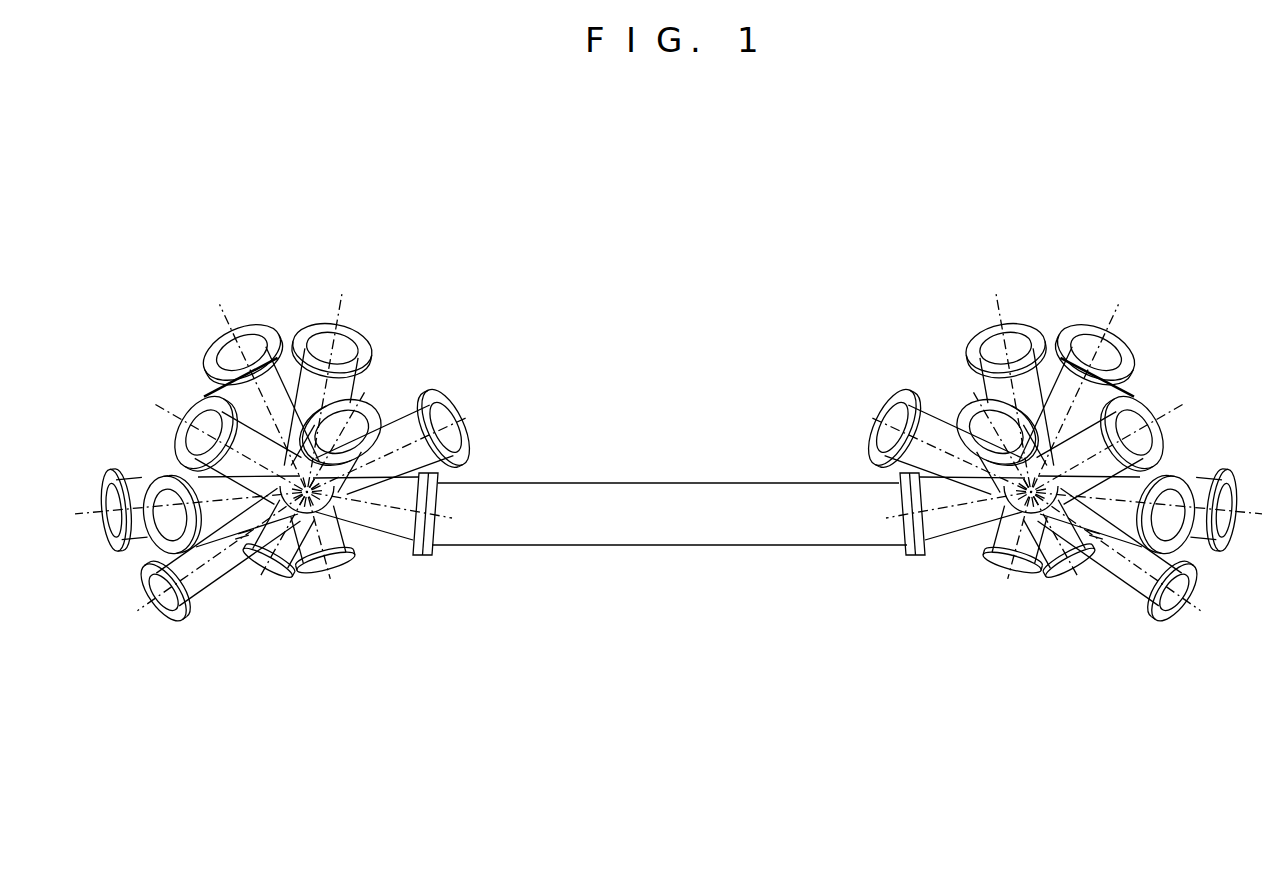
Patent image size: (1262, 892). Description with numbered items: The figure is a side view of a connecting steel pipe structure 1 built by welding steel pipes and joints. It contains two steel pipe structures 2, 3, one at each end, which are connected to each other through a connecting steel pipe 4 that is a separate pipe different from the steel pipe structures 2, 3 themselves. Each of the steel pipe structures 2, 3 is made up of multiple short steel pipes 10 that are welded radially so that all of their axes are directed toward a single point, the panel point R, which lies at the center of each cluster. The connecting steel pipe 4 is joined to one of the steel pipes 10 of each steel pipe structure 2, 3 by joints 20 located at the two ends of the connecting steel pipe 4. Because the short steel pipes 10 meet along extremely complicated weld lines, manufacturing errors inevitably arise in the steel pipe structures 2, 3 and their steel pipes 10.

The connecting steel pipe structure 1 is at (1200, 183).
The steel pipe structure 2 is at (277, 422).
The steel pipe structure 3 is at (1058, 422).
The connecting steel pipe 4 is at (669, 482).
The steel pipe 10 is at (669, 546).
The joint 20 is at (669, 559).
The panel point R is at (669, 566).